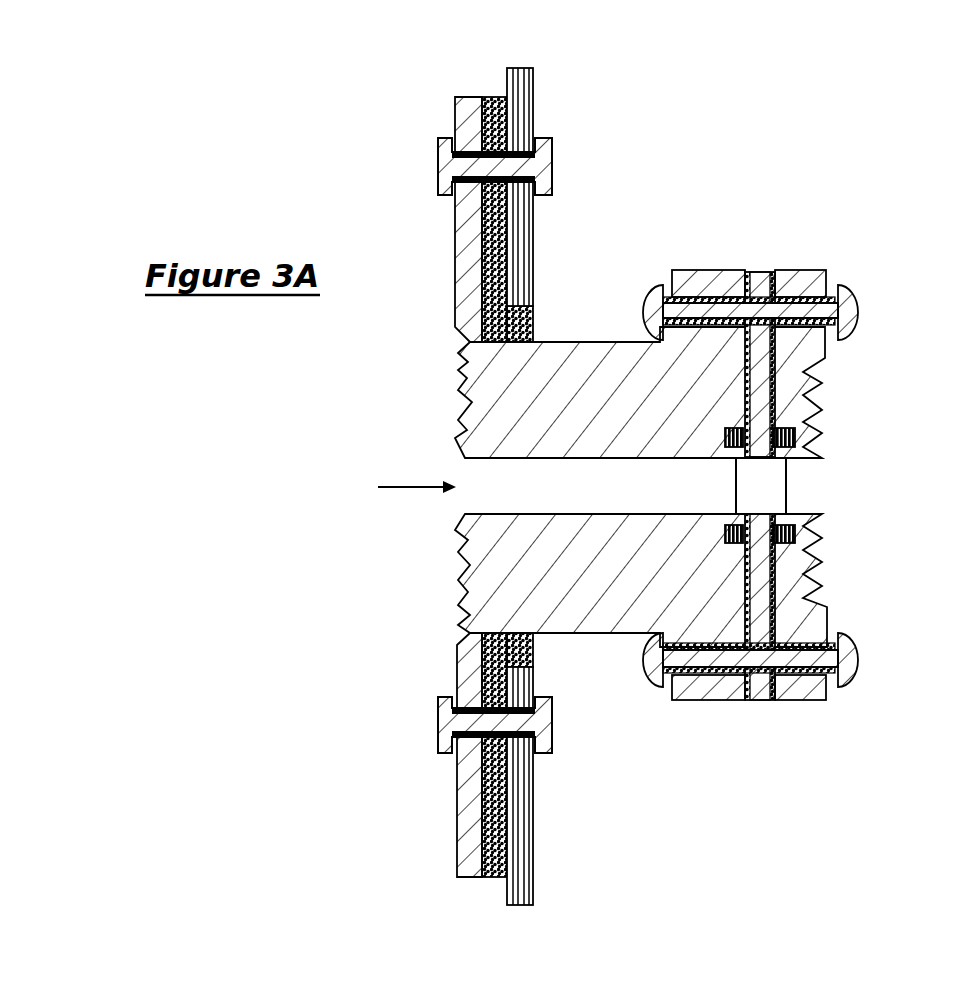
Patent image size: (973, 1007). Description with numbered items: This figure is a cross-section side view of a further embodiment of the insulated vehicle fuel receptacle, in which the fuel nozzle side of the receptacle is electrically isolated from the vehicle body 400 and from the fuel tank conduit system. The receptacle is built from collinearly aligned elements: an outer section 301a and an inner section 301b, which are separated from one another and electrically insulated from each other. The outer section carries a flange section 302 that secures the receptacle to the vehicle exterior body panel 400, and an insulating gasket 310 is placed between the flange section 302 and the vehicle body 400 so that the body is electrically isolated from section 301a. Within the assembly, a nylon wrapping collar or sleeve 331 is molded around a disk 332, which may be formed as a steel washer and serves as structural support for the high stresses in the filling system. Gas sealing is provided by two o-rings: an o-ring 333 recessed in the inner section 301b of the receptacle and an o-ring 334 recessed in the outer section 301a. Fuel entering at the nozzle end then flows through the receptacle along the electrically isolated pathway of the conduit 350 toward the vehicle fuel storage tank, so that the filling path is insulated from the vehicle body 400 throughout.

The outer section of the receptacle 301a is at (705, 678).
The inner section of the receptacle 301b is at (808, 682).
The flange section 302 is at (457, 182).
The insulating gasket 310 is at (495, 117).
The nylon wrapping collar or sleeve 331 is at (745, 278).
The disk 332 is at (758, 285).
The o-ring 333 is at (787, 492).
The o-ring 334 is at (736, 492).
The conduit 350 is at (389, 494).
The vehicle body 400 is at (522, 887).